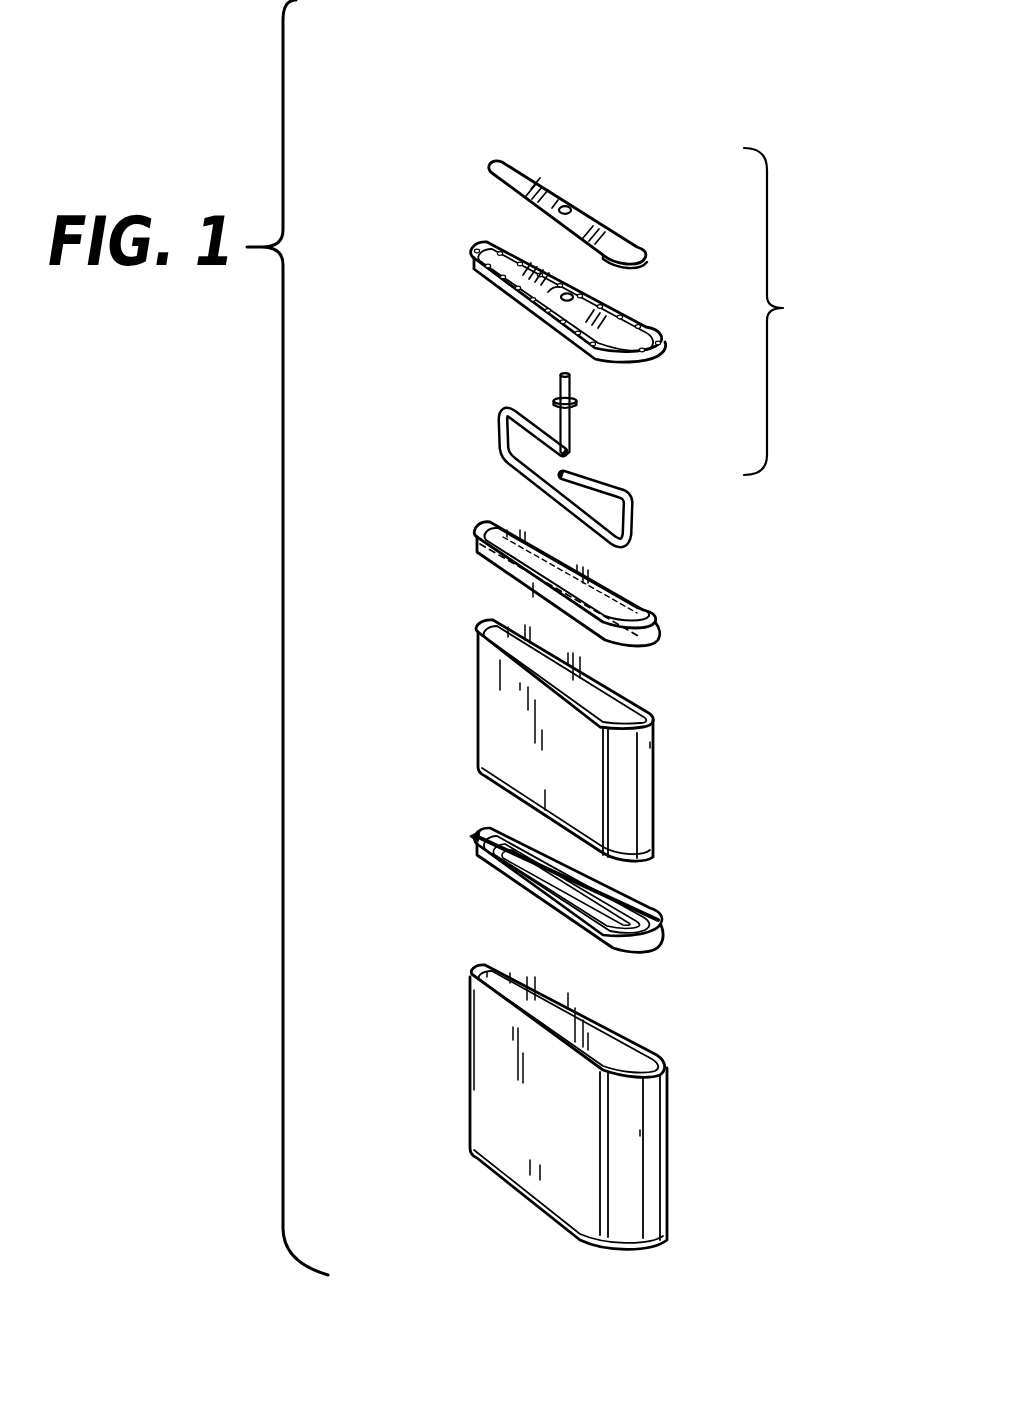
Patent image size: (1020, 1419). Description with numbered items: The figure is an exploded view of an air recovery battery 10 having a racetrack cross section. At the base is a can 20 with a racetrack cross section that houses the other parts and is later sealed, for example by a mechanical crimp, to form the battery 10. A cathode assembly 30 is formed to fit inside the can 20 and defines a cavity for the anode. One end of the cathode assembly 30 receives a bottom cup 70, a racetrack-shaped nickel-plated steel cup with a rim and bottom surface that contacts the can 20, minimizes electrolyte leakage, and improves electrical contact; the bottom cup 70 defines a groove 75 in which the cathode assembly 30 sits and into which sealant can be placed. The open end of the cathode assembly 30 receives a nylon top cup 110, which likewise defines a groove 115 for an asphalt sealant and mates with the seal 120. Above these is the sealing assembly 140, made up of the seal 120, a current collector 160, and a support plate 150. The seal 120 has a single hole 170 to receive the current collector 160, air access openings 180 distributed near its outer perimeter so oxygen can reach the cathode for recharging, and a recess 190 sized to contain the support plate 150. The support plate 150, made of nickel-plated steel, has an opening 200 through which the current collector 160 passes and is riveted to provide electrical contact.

The air recovery battery 10 is at (745, 78).
The can 20 is at (647, 1147).
The cathode assembly 30 is at (643, 783).
The bottom cup 70 is at (661, 922).
The groove 75 is at (474, 832).
The top cup 110 is at (650, 614).
The groove 115 is at (473, 561).
The seal 120 is at (650, 331).
The sealing assembly 140 is at (791, 311).
The support plate 150 is at (623, 238).
The current collector 160 is at (631, 518).
The hole 170 is at (546, 287).
The air access opening 180 is at (475, 249).
The recess 190 is at (505, 247).
The opening 200 is at (566, 205).